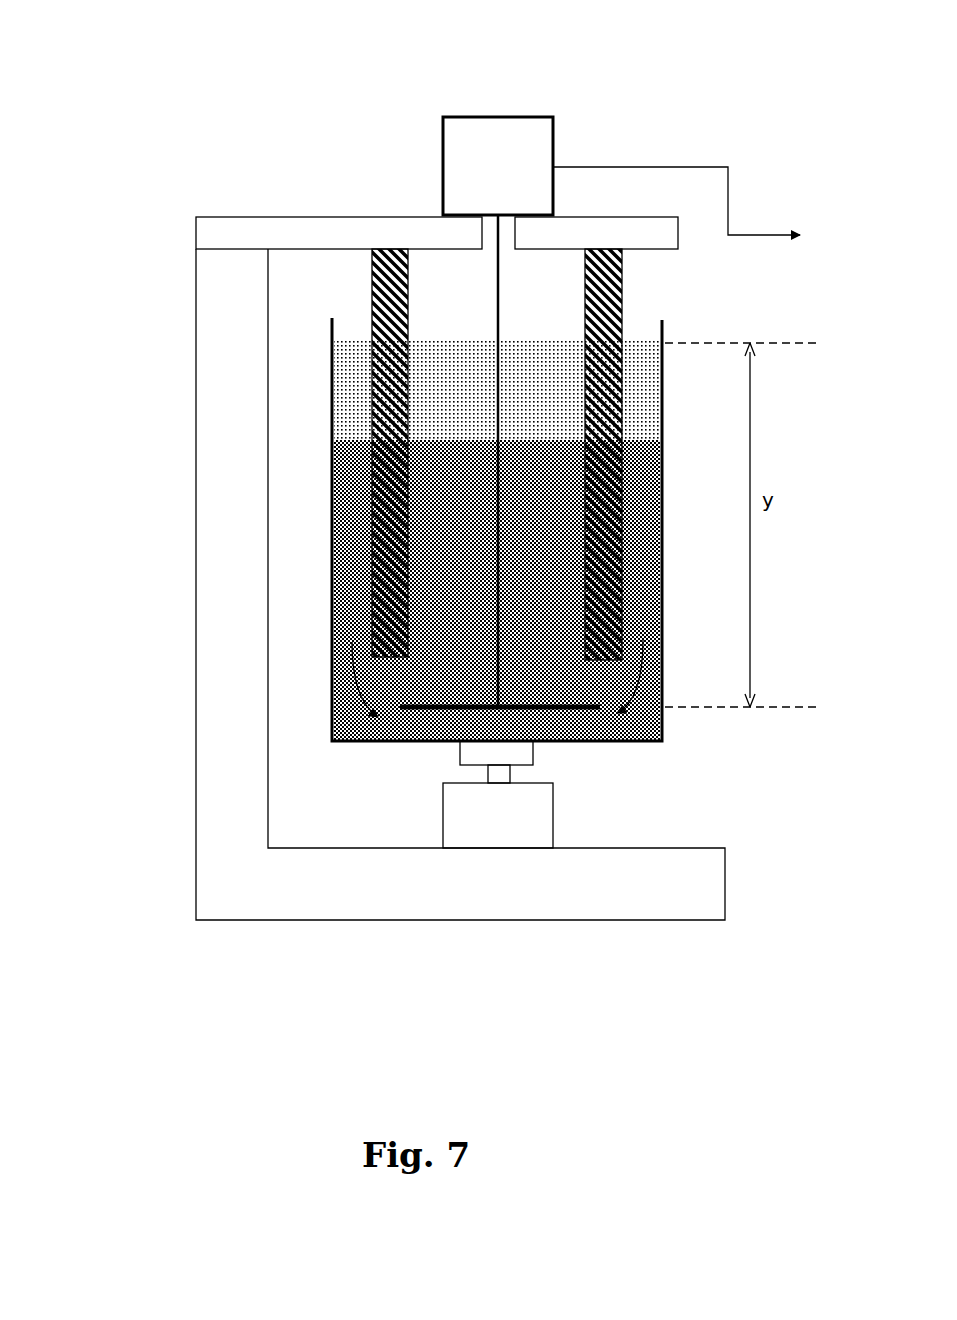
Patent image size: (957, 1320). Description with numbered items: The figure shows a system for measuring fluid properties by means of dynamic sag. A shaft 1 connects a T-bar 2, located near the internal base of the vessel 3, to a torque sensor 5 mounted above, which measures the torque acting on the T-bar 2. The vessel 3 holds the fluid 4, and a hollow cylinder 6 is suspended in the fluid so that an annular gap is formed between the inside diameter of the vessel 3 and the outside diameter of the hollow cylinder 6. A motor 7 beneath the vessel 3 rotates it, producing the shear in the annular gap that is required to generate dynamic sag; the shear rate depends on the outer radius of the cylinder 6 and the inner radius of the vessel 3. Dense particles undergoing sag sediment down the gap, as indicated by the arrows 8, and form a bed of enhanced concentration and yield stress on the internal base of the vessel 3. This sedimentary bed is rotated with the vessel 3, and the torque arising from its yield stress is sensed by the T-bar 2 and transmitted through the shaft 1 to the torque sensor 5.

The shaft 1 is at (493, 275).
The T-bar 2 is at (556, 711).
The vessel 3 is at (328, 742).
The fluid 4 is at (460, 518).
The torque sensor 5 is at (498, 117).
The hollow cylinder 6 is at (370, 598).
The motor 7 is at (498, 794).
The arrows 8 is at (625, 713).